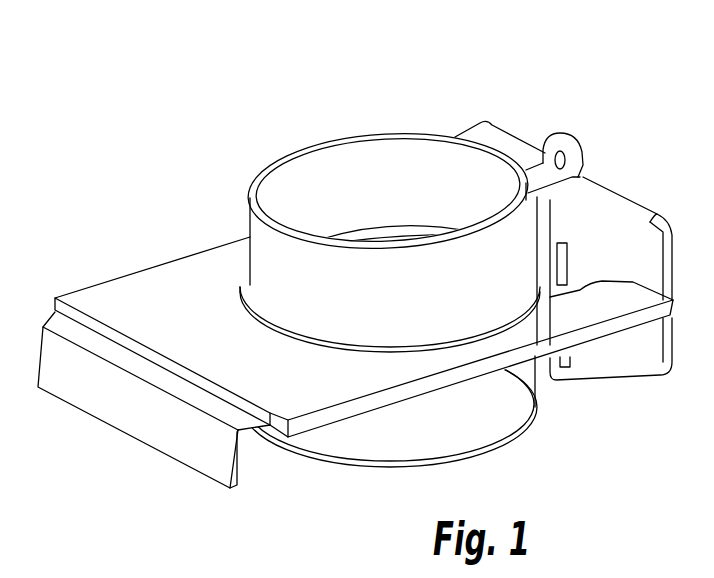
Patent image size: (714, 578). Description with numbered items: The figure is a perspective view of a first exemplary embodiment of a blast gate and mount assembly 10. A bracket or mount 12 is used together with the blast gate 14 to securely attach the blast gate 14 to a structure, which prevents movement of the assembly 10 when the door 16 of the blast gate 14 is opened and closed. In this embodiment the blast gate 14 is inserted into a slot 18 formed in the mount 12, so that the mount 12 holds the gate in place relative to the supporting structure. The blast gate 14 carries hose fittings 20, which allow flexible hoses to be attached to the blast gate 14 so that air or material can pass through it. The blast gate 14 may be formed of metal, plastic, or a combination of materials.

The blast gate and mount assembly 10 is at (346, 118).
The mount 12 is at (564, 245).
The blast gate 14 is at (355, 354).
The door 16 is at (145, 418).
The slot 18 is at (590, 284).
The hose fittings 20 is at (263, 260).